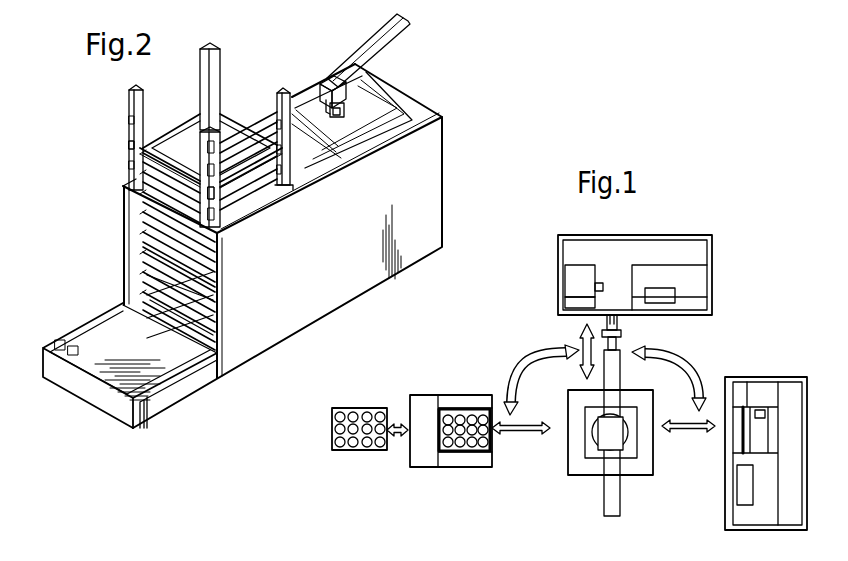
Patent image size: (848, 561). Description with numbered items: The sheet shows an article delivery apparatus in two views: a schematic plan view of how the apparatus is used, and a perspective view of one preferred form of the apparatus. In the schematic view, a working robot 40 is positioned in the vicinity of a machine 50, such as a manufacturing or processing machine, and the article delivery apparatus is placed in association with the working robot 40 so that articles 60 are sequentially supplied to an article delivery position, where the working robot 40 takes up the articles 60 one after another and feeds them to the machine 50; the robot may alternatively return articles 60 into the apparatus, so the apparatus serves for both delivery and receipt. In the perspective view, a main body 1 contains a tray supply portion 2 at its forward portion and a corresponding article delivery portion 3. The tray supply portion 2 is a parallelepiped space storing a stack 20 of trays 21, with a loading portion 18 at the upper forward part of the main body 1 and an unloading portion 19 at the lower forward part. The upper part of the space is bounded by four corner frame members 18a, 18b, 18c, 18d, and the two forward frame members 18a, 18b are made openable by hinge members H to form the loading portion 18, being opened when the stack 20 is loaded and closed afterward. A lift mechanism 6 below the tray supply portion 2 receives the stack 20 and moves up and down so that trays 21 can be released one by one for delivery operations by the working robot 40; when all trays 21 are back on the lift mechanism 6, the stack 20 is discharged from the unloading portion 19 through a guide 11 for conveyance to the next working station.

In FIG. 2, the main body 1 is at (447, 160).
In FIG. 2, the tray supply portion 2 is at (231, 158).
In FIG. 2, the article delivery portion 3 is at (363, 124).
In FIG. 2, the lift mechanism 6 is at (155, 280).
In FIG. 2, the guide 11 is at (180, 365).
In FIG. 2, the loading portion 18 is at (196, 117).
In FIG. 2, the frame member 18a is at (138, 88).
In FIG. 2, the frame member 18b is at (220, 140).
In FIG. 2, the frame member 18c is at (215, 47).
In FIG. 2, the frame member 18d is at (283, 87).
In FIG. 2, the unloading portion 19 is at (143, 250).
In FIG. 2, the stack of trays 20 is at (150, 215).
In FIG. 2, the tray 21 is at (326, 153).
In FIG. 2, the working robot 40 is at (375, 43).
In FIG. 1, the working robot 40 is at (641, 468).
In FIG. 1, the machine 50 is at (702, 258).
In FIG. 2, the article 60 is at (336, 118).
In FIG. 1, the article 60 is at (363, 452).
In FIG. 2, the hinge member H is at (132, 147).